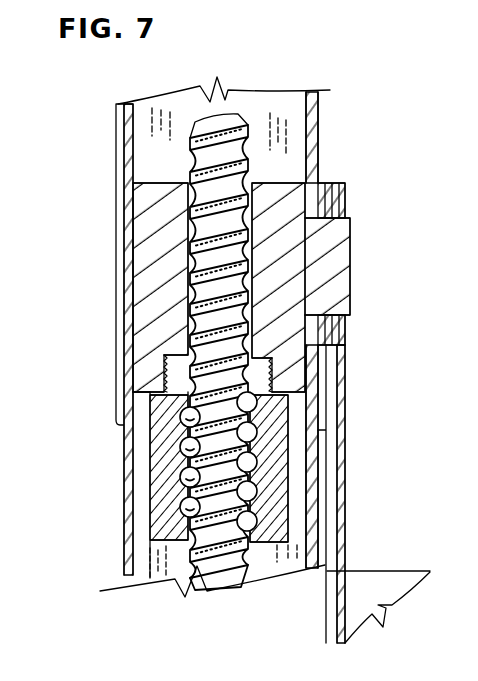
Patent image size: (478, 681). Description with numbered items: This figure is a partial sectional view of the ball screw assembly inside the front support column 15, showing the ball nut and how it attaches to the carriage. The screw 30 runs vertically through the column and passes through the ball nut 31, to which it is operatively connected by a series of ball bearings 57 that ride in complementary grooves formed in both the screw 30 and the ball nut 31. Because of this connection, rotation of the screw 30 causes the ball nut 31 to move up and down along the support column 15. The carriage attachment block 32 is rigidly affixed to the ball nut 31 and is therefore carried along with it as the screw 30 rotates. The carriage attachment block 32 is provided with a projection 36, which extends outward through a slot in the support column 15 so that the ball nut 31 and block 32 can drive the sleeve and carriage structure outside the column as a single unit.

The front support column 15 is at (118, 126).
The screw 30 is at (200, 132).
The ball nut 31 is at (150, 404).
The carriage attachment block 32 is at (277, 183).
The projection 36 is at (352, 248).
The ball bearings 57 is at (181, 505).